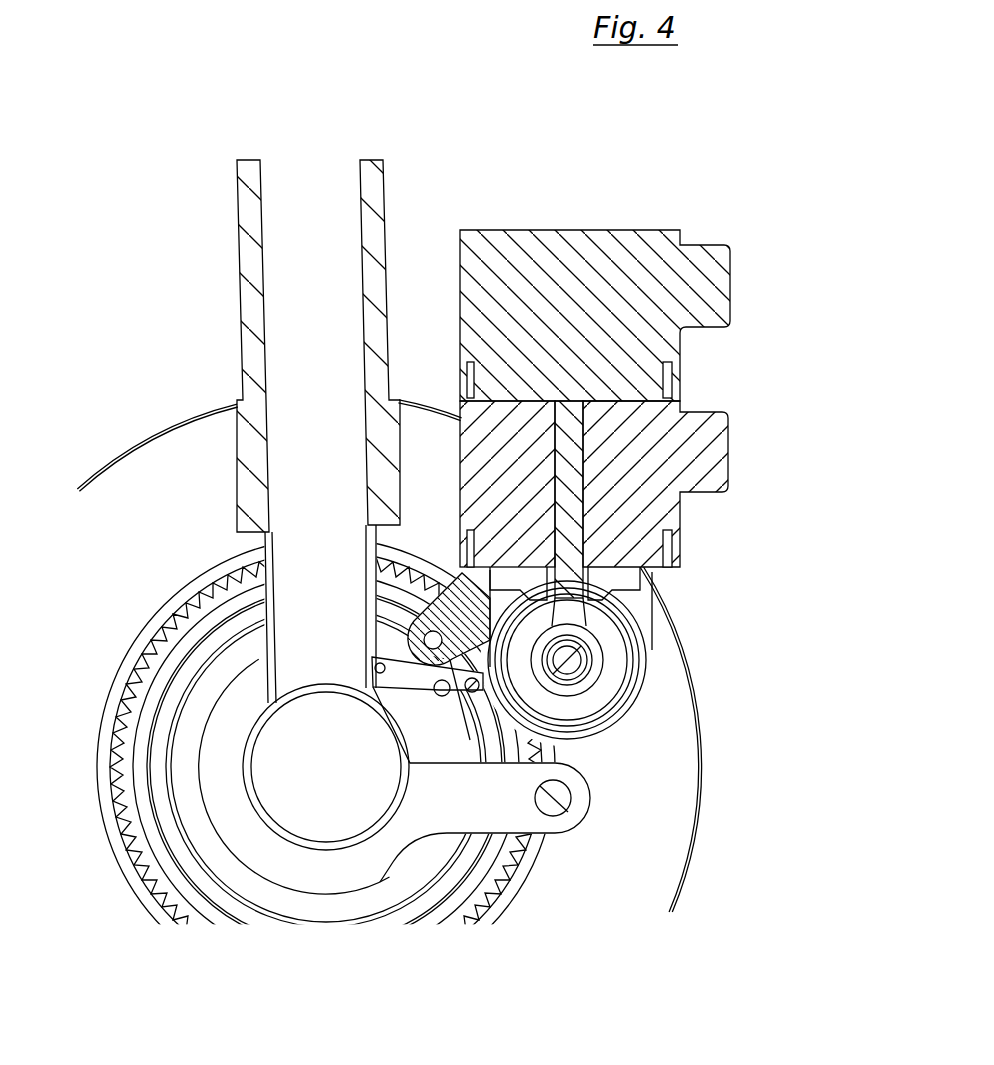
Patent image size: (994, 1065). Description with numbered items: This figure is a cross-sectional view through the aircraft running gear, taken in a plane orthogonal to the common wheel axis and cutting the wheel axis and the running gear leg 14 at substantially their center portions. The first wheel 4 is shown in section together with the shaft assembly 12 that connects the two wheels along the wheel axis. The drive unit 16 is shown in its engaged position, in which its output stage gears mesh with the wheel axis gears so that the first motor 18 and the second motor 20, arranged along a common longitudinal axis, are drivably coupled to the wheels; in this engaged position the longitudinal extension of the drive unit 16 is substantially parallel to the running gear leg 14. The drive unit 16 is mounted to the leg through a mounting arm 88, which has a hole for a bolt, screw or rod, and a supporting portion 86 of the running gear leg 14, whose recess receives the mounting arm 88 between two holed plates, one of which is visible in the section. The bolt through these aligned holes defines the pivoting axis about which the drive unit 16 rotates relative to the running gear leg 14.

The first wheel 4 is at (700, 735).
The shaft assembly 12 is at (485, 823).
The running gear leg 14 is at (385, 217).
The drive unit 16 is at (636, 419).
The first motor 18 is at (732, 455).
The second motor 20 is at (732, 300).
The supporting portion 86 is at (452, 733).
The mounting arm 88 is at (476, 626).